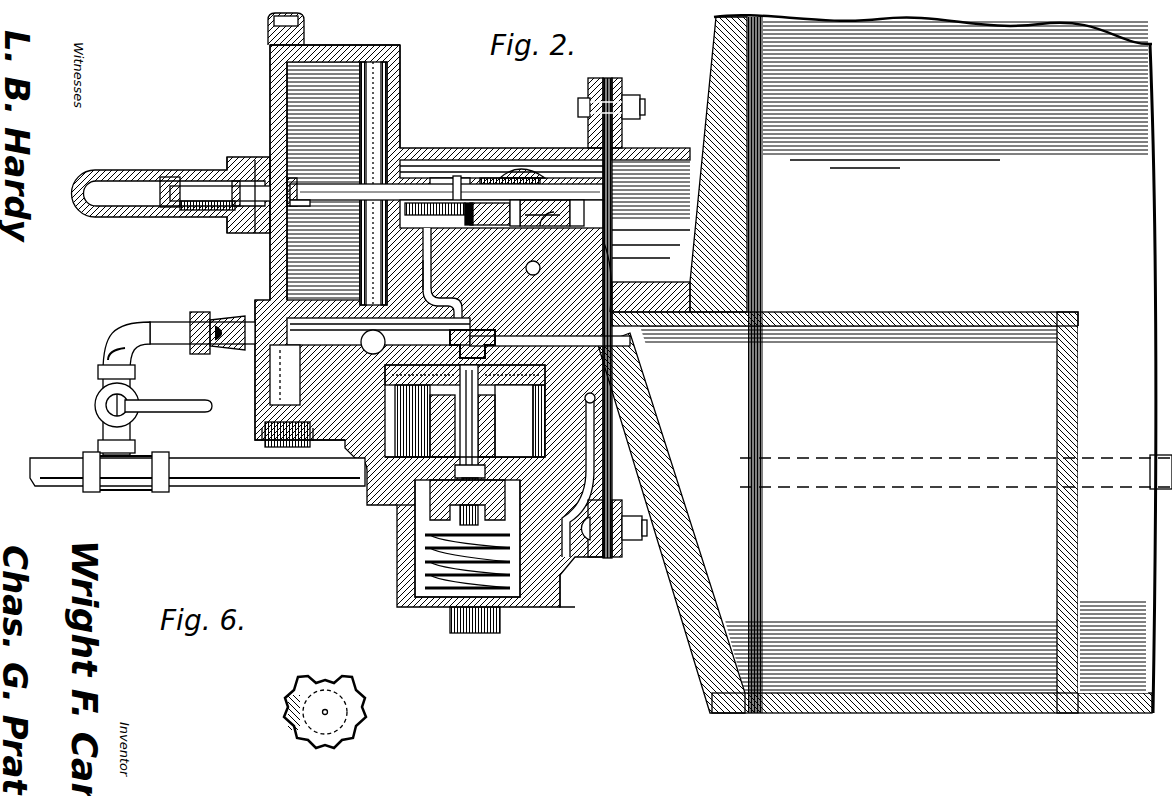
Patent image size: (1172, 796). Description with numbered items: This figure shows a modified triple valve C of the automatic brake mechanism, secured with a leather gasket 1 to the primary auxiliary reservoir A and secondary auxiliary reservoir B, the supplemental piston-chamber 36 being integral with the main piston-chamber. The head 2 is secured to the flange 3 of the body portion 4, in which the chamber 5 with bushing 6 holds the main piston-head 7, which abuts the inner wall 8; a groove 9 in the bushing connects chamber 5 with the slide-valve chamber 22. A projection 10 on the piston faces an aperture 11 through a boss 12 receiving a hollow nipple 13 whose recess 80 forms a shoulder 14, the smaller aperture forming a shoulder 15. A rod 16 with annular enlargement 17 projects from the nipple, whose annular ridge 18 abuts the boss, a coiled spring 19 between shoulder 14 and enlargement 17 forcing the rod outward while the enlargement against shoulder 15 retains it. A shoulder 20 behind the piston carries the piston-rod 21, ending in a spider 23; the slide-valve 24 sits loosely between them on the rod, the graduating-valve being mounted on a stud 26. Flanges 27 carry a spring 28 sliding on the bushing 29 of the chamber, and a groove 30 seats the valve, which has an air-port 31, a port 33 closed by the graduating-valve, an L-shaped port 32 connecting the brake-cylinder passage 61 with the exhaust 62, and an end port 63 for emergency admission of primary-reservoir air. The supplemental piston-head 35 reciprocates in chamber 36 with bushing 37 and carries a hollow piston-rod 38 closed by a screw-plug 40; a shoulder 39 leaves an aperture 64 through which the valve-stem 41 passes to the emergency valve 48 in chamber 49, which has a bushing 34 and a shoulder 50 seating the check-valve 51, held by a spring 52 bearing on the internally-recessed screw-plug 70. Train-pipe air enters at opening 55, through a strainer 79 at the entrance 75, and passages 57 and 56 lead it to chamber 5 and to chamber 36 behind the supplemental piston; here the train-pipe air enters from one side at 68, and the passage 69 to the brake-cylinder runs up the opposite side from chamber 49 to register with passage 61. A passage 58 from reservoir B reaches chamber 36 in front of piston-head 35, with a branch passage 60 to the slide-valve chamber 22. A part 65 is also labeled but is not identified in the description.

In FIG. 2, the leather gasket 1 is at (607, 82).
In FIG. 2, the head 2 is at (283, 102).
In FIG. 2, the flange 3 is at (621, 318).
In FIG. 2, the body portion 4 is at (595, 276).
In FIG. 2, the cylindrical chamber 5 is at (323, 181).
In FIG. 2, the bushing 6 is at (350, 55).
In FIG. 2, the main piston-head 7 is at (360, 222).
In FIG. 2, the inner wall 8 is at (370, 254).
In FIG. 2, the small groove 9 is at (403, 56).
In FIG. 2, the projection 10 is at (352, 185).
In FIG. 2, the aperture 11 is at (301, 209).
In FIG. 2, the boss 12 is at (251, 206).
In FIG. 2, the hollow nipple 13 is at (128, 216).
In FIG. 2, the shoulder 14 is at (184, 180).
In FIG. 2, the shoulder 15 is at (296, 186).
In FIG. 2, the rod 16 is at (168, 178).
In FIG. 2, the annular enlargement 17 is at (280, 178).
In FIG. 2, the annular ridge 18 is at (240, 168).
In FIG. 2, the coiled spring 19 is at (198, 210).
In FIG. 2, the shoulder 20 is at (458, 167).
In FIG. 2, the piston-rod 21 is at (475, 191).
In FIG. 2, the slide-valve chamber 22 is at (510, 159).
In FIG. 2, the spider 23 is at (651, 230).
In FIG. 2, the slide-valve 24 is at (540, 235).
In FIG. 2, the stud 26 is at (548, 226).
In FIG. 2, the flanges 27 is at (588, 108).
In FIG. 2, the spring 28 is at (536, 165).
In FIG. 2, the bushing 29 is at (462, 150).
In FIG. 2, the groove 30 is at (431, 282).
In FIG. 2, the air-port 31 is at (512, 226).
In FIG. 2, the L-shaped groove 32 is at (485, 249).
In FIG. 2, the port 33 is at (465, 411).
In FIG. 2, the bushing 34 is at (478, 445).
In FIG. 2, the supplemental piston-head 35 is at (490, 472).
In FIG. 2, the supplemental piston-chamber 36 is at (470, 226).
In FIG. 2, the bushing 37 is at (529, 421).
In FIG. 2, the hollow piston-rod 38 is at (396, 405).
In FIG. 2, the shoulder 39 is at (496, 435).
In FIG. 2, the screw-plug 40 is at (422, 349).
In FIG. 2, the valve-stem 41 is at (397, 500).
In FIG. 2, the emergency valve 48 is at (415, 520).
In FIG. 6, the emergency valve 48 is at (378, 693).
In FIG. 2, the chamber 49 is at (467, 502).
In FIG. 2, the shoulder 50 is at (588, 530).
In FIG. 2, the check-valve 51 is at (565, 558).
In FIG. 2, the check-valve spring 52 is at (415, 573).
In FIG. 2, the opening 55 is at (361, 342).
In FIG. 2, the passage 56 is at (256, 385).
In FIG. 2, the passage 57 is at (268, 300).
In FIG. 2, the passage 58 is at (540, 347).
In FIG. 2, the branch passage 60 is at (410, 276).
In FIG. 2, the brake-cylinder passage 61 is at (481, 313).
In FIG. 2, the exhaust 62 is at (533, 275).
In FIG. 2, the port 63 is at (577, 226).
In FIG. 2, the aperture 64 is at (430, 462).
In FIG. 2, the valve stem nut 65 is at (482, 488).
In FIG. 2, the train-pipe air entrance 68 is at (312, 434).
In FIG. 2, the passage to the brake-cylinder 69 is at (595, 420).
In FIG. 2, the internally-recessed screw-plug 70 is at (478, 627).
In FIG. 2, the point of entrance of the train-pipe air 75 is at (232, 320).
In FIG. 2, the strainer 79 is at (196, 318).
In FIG. 2, the recess 80 is at (130, 194).
In FIG. 2, the primary auxiliary reservoir A is at (921, 163).
In FIG. 2, the secondary auxiliary reservoir B is at (885, 378).
In FIG. 2, the triple valve C is at (510, 86).